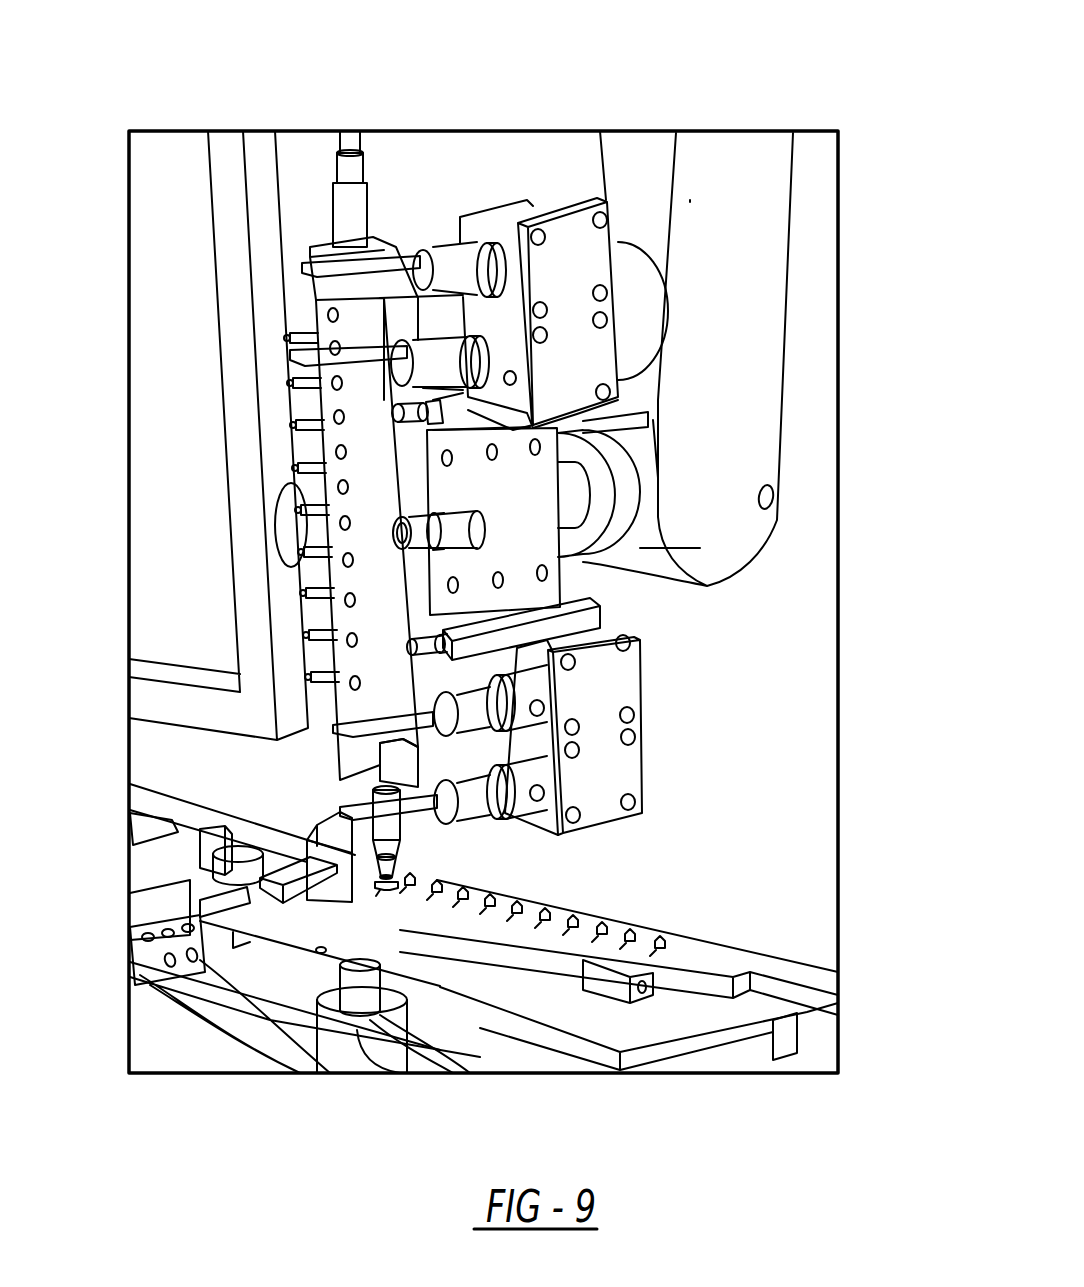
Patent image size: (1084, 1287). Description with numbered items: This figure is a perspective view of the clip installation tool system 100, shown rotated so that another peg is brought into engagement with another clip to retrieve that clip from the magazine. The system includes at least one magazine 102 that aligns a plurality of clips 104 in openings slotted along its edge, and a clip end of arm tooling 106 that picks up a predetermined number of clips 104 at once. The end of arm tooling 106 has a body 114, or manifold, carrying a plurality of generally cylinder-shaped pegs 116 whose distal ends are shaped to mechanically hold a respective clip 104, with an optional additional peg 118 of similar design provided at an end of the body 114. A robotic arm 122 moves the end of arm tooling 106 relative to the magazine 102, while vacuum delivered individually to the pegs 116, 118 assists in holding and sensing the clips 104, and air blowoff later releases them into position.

The clip installation tool system 100 is at (852, 113).
The magazine 102 is at (702, 942).
The clip 104 is at (348, 137).
The clip end of arm tooling 106 is at (648, 561).
The body 114 is at (328, 302).
The pegs 116 is at (318, 634).
The additional peg 118 is at (338, 187).
The robotic arm 122 is at (760, 383).